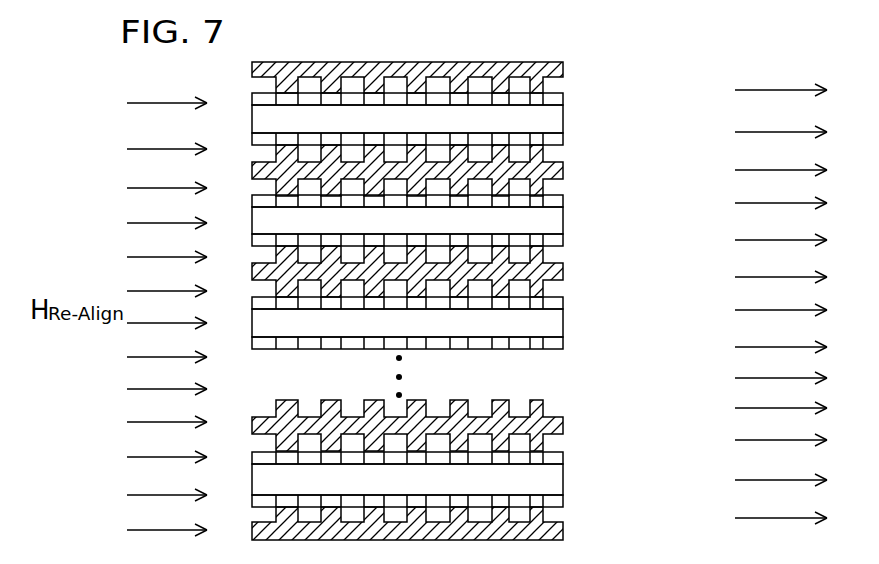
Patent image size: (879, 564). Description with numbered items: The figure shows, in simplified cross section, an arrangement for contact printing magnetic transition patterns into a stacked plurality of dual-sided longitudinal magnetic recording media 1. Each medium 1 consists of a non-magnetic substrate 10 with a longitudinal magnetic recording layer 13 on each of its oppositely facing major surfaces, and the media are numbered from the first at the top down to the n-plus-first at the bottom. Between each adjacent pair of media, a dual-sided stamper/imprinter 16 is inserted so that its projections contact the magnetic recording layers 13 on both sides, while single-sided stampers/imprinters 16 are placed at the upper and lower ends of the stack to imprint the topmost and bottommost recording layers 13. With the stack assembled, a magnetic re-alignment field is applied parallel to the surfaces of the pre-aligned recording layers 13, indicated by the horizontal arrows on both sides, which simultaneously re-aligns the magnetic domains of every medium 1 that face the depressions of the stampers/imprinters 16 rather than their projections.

The longitudinal magnetic recording medium 1 is at (475, 293).
The non-magnetic substrate 10 is at (416, 488).
The longitudinal magnetic recording layer 13 is at (573, 497).
The stamper/imprinter 16 is at (572, 69).